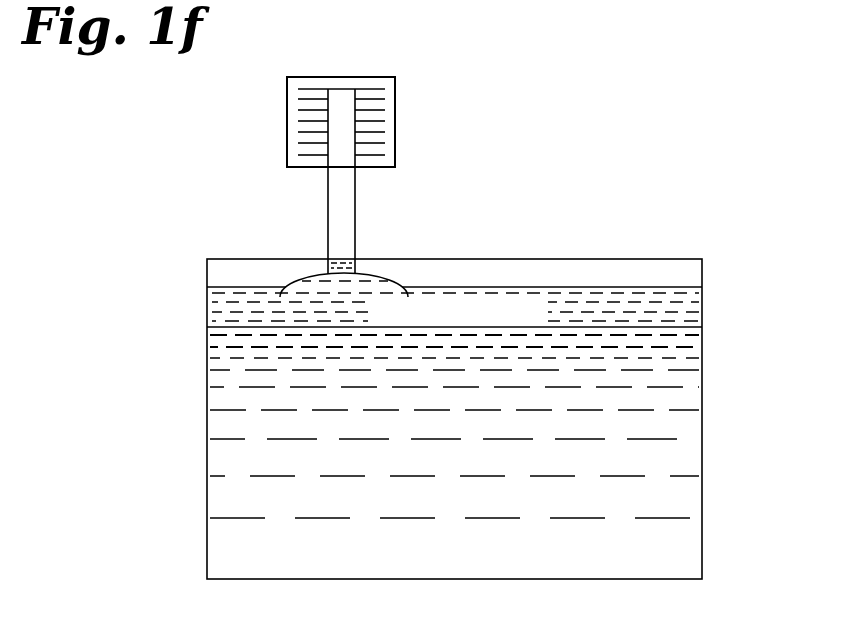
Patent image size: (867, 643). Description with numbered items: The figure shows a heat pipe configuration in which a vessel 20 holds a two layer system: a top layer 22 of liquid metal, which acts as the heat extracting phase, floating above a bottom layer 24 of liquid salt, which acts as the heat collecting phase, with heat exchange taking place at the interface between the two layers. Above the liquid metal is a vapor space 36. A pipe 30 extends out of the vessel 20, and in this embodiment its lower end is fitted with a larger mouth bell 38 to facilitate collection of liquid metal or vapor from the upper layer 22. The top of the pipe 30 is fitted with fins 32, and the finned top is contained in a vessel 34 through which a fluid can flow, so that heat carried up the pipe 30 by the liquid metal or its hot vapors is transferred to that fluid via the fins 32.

The vessel 20 is at (703, 545).
The top layer 22 is at (697, 311).
The bottom layer 24 is at (697, 455).
The pipe 30 is at (356, 212).
The fins 32 is at (384, 108).
The vessel 34 is at (395, 148).
The vapor space 36 is at (567, 281).
The mouth bell 38 is at (398, 287).